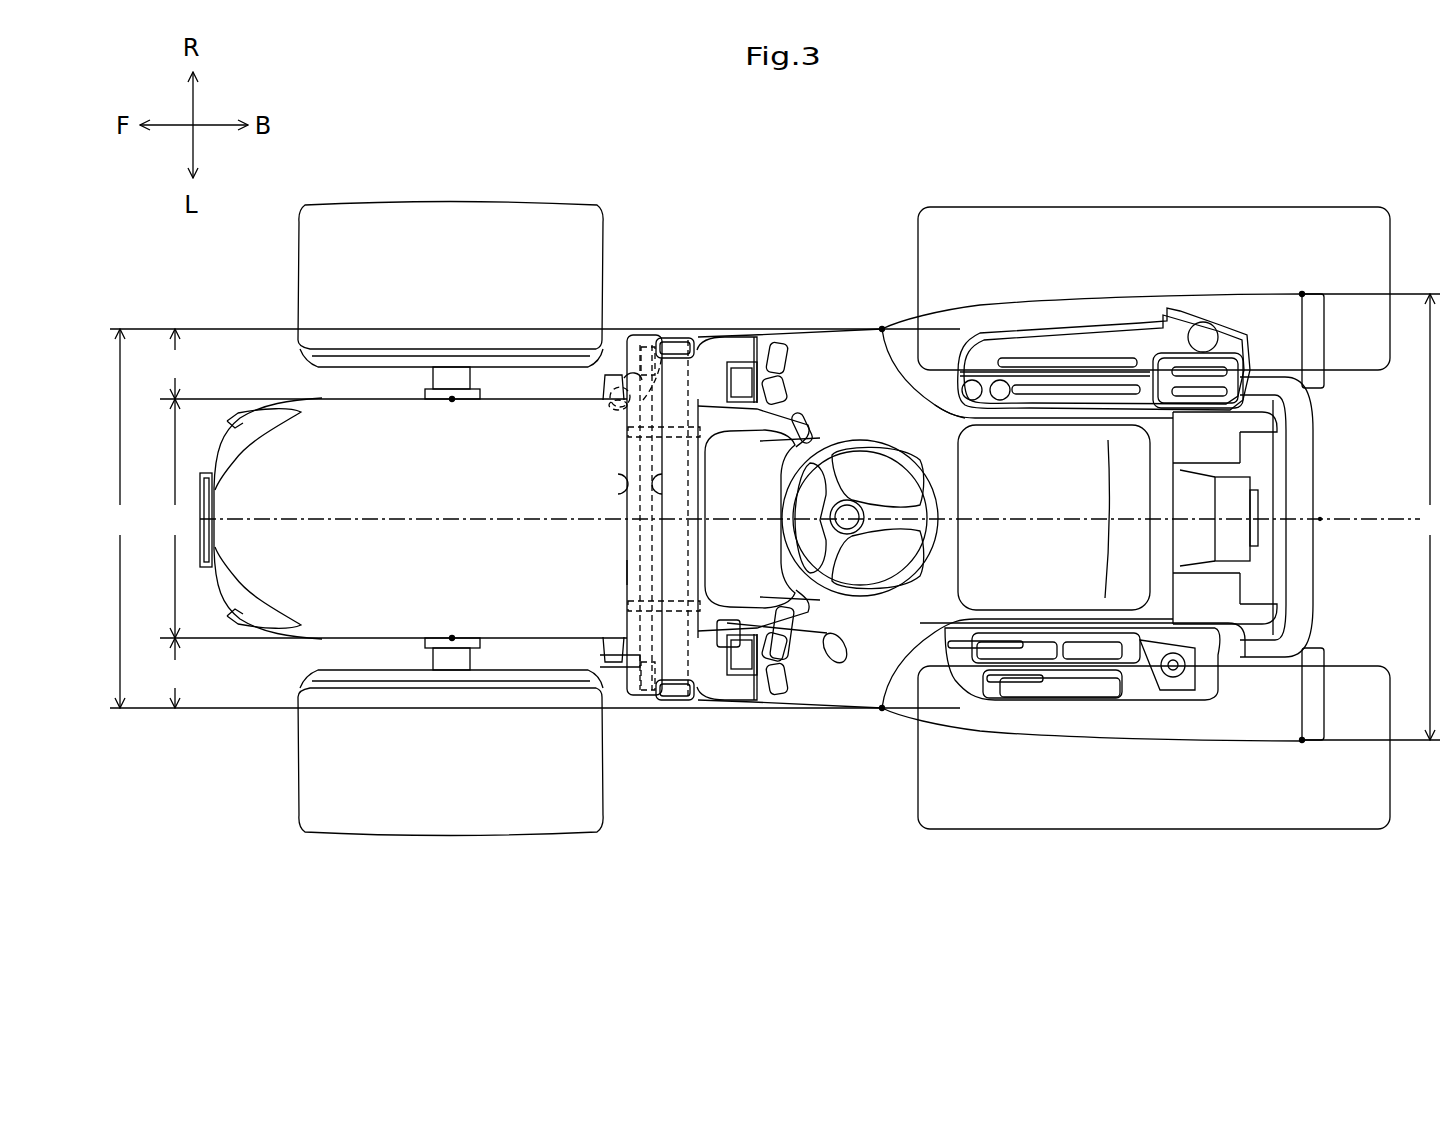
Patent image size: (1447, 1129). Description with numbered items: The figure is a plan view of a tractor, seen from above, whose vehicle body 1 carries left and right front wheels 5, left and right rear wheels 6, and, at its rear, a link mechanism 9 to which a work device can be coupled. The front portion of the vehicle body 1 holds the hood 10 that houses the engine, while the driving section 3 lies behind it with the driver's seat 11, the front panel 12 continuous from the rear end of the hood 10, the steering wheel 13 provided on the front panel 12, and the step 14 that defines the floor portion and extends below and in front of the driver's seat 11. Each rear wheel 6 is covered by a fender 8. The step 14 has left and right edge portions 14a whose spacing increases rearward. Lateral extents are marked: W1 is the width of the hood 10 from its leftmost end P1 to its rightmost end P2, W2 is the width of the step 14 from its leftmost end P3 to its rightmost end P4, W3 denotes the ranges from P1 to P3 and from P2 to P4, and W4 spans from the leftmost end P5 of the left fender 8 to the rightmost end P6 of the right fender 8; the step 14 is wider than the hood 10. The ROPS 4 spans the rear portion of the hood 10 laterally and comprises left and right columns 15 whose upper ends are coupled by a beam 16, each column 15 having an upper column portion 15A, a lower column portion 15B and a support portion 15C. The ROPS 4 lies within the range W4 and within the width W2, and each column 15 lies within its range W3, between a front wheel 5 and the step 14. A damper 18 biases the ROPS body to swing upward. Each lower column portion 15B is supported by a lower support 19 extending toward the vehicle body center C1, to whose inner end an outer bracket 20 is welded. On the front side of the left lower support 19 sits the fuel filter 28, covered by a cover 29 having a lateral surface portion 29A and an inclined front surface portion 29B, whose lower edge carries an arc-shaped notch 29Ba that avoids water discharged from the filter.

The vehicle body 1 is at (268, 300).
The hood 10 is at (330, 417).
The driving section 3 is at (936, 384).
The ROPS 4 is at (625, 572).
The front wheels 5 is at (410, 215).
The rear wheels 6 is at (1150, 217).
The fender 8 is at (1060, 307).
The link mechanism 9 is at (1270, 585).
The driver's seat 11 is at (960, 457).
The front panel 12 is at (790, 425).
The steering wheel 13 is at (933, 533).
The step 14 is at (833, 343).
The edge portions 14a is at (800, 330).
The columns 15 is at (675, 333).
The upper column portion 15A is at (678, 338).
The lower column portion 15B is at (640, 350).
The support portion 15C is at (663, 333).
The beam 16 is at (635, 546).
The damper 18 is at (640, 660).
The lower support 19 is at (697, 412).
The outer bracket 20 is at (645, 437).
The fuel filter 28 is at (643, 400).
The cover 29 is at (597, 388).
The lateral surface portion 29A is at (602, 388).
The front surface portion 29B is at (613, 373).
The notch 29Ba is at (608, 427).
The leftmost end of the hood P1 is at (452, 637).
The rightmost end of the hood P2 is at (452, 400).
The leftmost end of the step P3 is at (882, 709).
The rightmost end of the step P4 is at (882, 328).
The leftmost end of the left fender P5 is at (1302, 741).
The rightmost end of the right fender P6 is at (1302, 293).
The vehicle body center C1 is at (1320, 517).
The lateral width of the hood W1 is at (170, 518).
The lateral width of the step W2 is at (113, 518).
The range W3 is at (171, 518).
The range W4 is at (1429, 517).